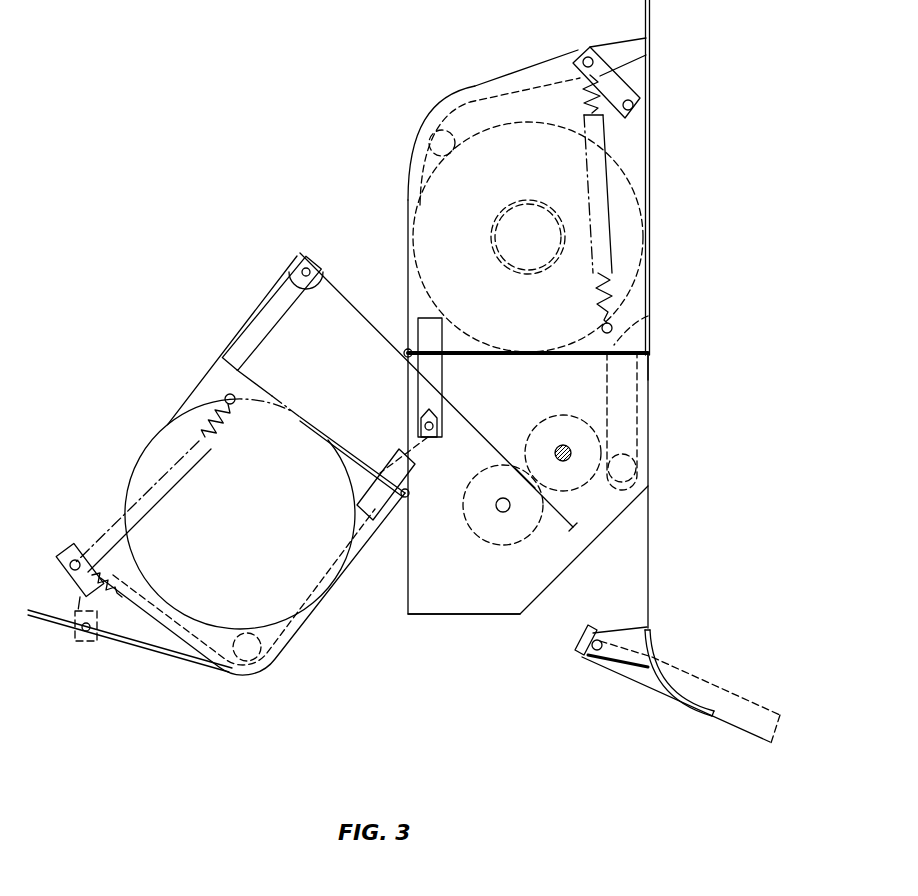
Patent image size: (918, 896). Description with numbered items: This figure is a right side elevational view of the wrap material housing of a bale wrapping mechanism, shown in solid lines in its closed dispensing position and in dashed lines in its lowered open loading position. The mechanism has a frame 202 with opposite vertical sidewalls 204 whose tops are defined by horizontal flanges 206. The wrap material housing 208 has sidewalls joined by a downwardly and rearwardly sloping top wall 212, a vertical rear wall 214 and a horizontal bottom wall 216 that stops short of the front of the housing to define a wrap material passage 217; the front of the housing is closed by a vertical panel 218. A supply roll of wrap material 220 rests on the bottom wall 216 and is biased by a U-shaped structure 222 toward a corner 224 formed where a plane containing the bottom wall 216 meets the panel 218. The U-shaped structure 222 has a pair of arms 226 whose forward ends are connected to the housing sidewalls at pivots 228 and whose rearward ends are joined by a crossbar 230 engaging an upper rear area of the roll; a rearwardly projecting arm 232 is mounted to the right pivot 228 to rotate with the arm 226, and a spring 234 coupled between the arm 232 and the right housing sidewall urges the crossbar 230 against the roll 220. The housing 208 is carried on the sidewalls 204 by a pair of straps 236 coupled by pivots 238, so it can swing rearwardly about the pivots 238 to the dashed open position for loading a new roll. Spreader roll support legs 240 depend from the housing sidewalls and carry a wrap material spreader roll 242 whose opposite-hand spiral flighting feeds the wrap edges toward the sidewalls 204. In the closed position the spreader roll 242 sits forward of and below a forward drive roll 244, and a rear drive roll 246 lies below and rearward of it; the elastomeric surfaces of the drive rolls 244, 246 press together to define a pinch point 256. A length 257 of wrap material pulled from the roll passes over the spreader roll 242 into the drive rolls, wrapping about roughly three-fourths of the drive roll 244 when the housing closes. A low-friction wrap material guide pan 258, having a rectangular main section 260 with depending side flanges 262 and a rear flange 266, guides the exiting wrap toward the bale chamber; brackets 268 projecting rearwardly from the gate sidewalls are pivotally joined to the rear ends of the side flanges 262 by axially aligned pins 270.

The frame 202 is at (403, 606).
The vertical sidewalls 204 is at (452, 604).
The horizontal flanges 206 is at (650, 313).
The wrap material housing 208 is at (404, 178).
The top wall 212 is at (517, 76).
The rear wall 214 is at (407, 228).
The bottom wall 216 is at (472, 356).
The wrap material passage 217 is at (650, 362).
The vertical panel 218 is at (651, 225).
The supply roll of wrap material 220 is at (640, 165).
The U-shaped structure 222 is at (466, 99).
The corner 224 is at (651, 350).
The arms 226 is at (562, 78).
The pivots 228 is at (649, 112).
The crossbar 230 is at (429, 140).
The rearwardly projecting arm 232 is at (650, 57).
The spring 234 is at (612, 282).
The straps 236 is at (417, 393).
The pivots 238 is at (430, 432).
The spreader roll support legs 240 is at (638, 405).
The wrap material spreader roll 242 is at (640, 470).
The forward drive roll 244 is at (592, 418).
The rear drive roll 246 is at (518, 548).
The pinch point 256 is at (525, 472).
The length of wrap material 257 is at (376, 327).
The wrap material guide pan 258 is at (660, 712).
The rectangular main section 260 is at (610, 625).
The side flanges 262 is at (600, 672).
The rear flange 266 is at (580, 640).
The brackets 268 is at (648, 626).
The pins 270 is at (582, 655).